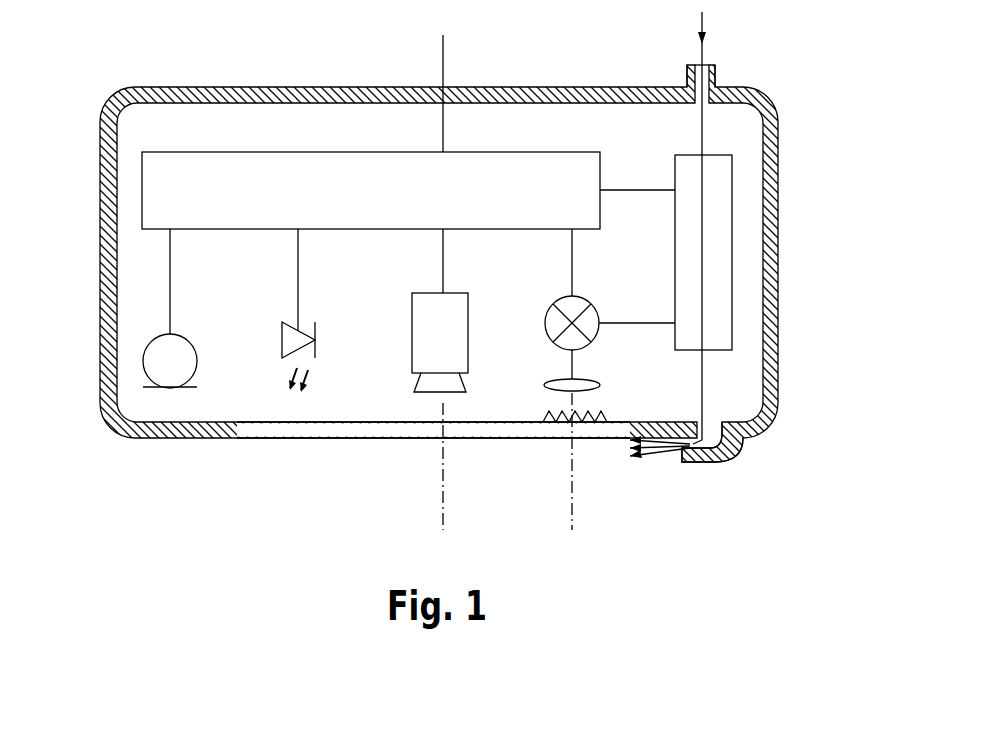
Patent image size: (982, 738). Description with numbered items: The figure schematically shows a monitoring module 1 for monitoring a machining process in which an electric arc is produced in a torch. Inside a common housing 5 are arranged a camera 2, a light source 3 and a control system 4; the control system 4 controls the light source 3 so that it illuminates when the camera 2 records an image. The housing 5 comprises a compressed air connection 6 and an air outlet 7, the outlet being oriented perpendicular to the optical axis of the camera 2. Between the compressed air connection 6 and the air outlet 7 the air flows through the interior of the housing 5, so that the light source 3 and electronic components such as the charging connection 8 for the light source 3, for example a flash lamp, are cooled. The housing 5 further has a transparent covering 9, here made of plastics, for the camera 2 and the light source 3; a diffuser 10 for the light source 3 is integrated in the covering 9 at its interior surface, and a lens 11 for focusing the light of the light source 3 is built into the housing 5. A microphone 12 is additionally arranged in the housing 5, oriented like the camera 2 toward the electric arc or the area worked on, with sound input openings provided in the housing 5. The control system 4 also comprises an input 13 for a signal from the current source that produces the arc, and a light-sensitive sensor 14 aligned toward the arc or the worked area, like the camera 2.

The monitoring module 1 is at (143, 41).
The camera 2 is at (428, 380).
The light source 3 is at (555, 320).
The control system 4 is at (237, 168).
The housing 5 is at (776, 228).
The compressed air connection 6 is at (716, 78).
The air outlet 7 is at (722, 452).
The charging connection 8 is at (720, 255).
The transparent covering 9 is at (297, 430).
The diffuser 10 is at (593, 430).
The lens 11 is at (565, 392).
The microphone 12 is at (167, 375).
The input 13 is at (467, 78).
The light-sensitive sensor 14 is at (282, 358).